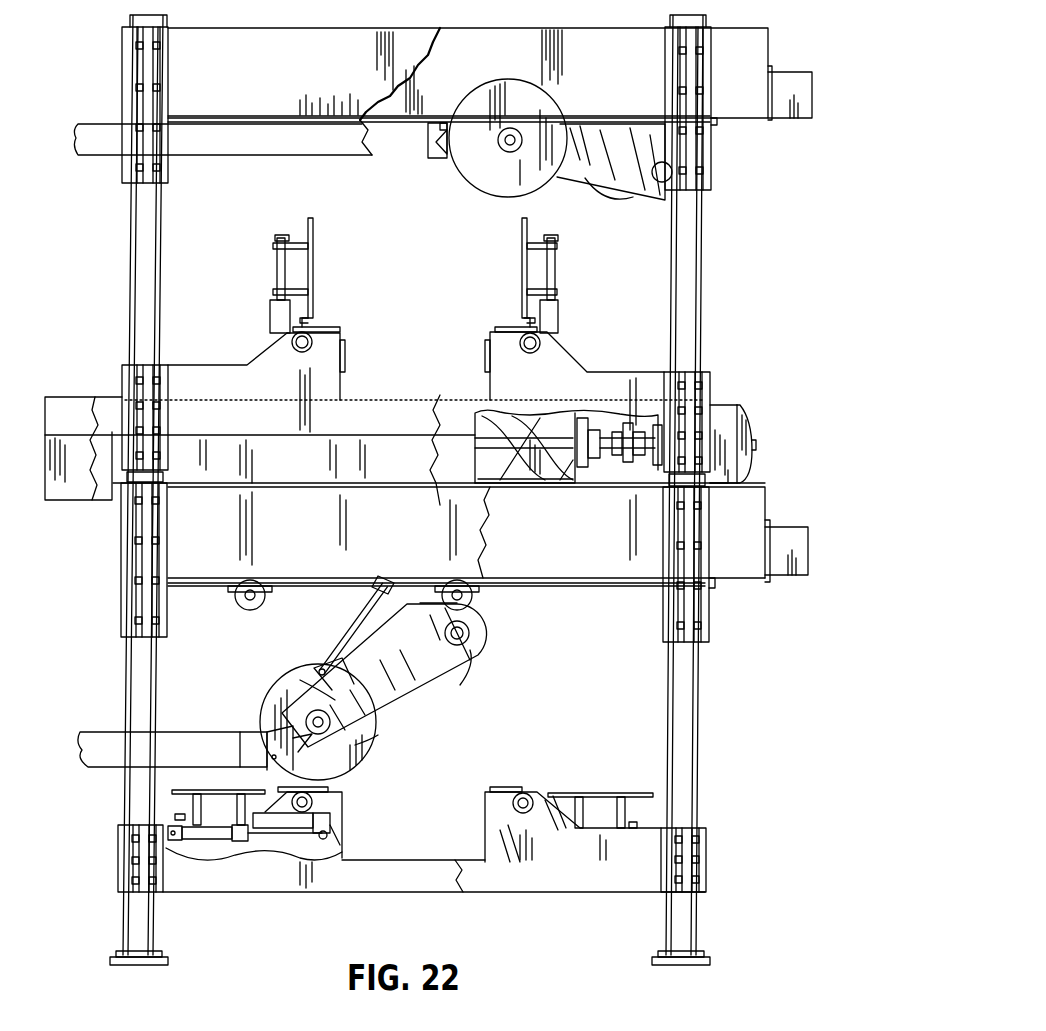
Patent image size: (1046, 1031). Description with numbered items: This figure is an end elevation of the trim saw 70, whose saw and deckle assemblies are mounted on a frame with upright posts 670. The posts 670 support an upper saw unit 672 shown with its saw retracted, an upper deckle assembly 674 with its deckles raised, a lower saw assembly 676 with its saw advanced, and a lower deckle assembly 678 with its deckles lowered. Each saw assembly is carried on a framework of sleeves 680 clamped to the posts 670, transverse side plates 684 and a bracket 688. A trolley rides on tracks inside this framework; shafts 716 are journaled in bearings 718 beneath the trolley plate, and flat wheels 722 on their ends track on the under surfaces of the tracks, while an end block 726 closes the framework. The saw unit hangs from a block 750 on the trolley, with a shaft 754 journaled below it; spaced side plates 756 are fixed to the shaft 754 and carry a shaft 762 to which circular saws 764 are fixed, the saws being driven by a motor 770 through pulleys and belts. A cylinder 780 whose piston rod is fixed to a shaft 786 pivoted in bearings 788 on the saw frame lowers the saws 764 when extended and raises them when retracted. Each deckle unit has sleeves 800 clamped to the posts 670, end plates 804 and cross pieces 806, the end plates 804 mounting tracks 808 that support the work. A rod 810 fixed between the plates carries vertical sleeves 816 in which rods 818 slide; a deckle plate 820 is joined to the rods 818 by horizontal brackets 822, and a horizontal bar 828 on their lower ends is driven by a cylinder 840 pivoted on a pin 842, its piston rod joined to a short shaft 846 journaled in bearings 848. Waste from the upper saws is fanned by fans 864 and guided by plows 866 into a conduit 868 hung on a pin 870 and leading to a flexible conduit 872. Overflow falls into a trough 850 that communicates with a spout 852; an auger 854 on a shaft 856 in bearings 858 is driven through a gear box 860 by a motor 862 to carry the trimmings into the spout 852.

The apparatus 70 is at (258, 948).
The upright posts 670 is at (131, 262).
The upper saw unit 672 is at (784, 42).
The upper deckle assembly 674 is at (750, 410).
The lower saw assembly 676 is at (758, 516).
The lower deckle assembly 678 is at (730, 842).
The sleeves 680 is at (160, 45).
The transverse side plates 684 is at (498, 38).
The bracket 688 is at (710, 145).
The shafts 716 is at (266, 595).
The bearings 718 is at (428, 132).
The flat wheels 722 is at (455, 580).
The end block 726 is at (798, 108).
The block 750 is at (472, 608).
The shaft 754 is at (655, 170).
The side plates 756 is at (608, 137).
The shaft 762 is at (514, 138).
The circular saws 764 is at (465, 165).
The motor 770 is at (620, 200).
The cylinder 780 is at (372, 592).
The shaft 786 is at (318, 665).
The bearings 788 is at (330, 674).
The sleeves 800 is at (127, 378).
The end plates 804 is at (198, 372).
The cross pieces 806 is at (345, 350).
The tracks 808 is at (322, 327).
The rod 810 is at (300, 352).
The vertical sleeves 816 is at (272, 312).
The rods 818 is at (280, 235).
The deckle plate 820 is at (314, 224).
The horizontal brackets 822 is at (276, 290).
The horizontal bar 828 is at (332, 834).
The cylinder 840 is at (220, 840).
The pin 842 is at (185, 822).
The short shaft 846 is at (321, 840).
The bearings 848 is at (332, 838).
The trough 850 is at (320, 470).
The spout 852 is at (76, 492).
The auger 854 is at (522, 484).
The shaft 856 is at (560, 484).
The bearings 858 is at (606, 460).
The gear box 860 is at (716, 484).
The motor 862 is at (746, 462).
The fans 864 is at (304, 680).
The plows 866 is at (445, 152).
The conduit 868 is at (432, 152).
The pin 870 is at (270, 757).
The flexible conduit 872 is at (330, 140).